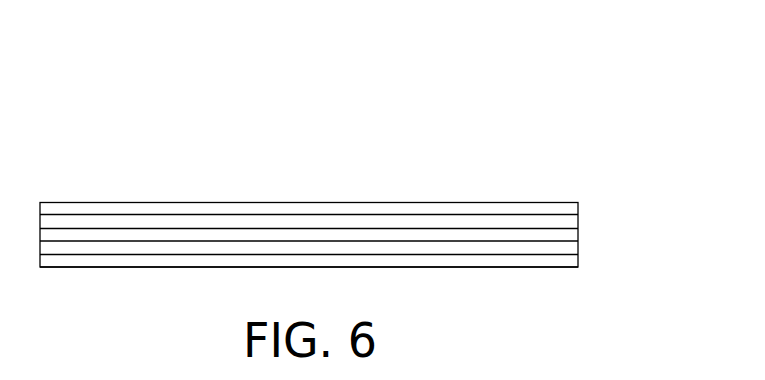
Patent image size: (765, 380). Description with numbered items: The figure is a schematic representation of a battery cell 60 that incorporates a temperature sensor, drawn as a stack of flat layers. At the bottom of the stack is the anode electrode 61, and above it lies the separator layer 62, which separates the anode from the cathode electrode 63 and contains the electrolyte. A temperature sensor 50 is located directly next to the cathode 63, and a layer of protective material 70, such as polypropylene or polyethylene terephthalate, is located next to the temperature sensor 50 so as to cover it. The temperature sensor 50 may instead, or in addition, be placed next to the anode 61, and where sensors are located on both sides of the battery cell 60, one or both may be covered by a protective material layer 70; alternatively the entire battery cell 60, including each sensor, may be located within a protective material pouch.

The battery cell 60 is at (339, 172).
The layer of protective material 70 is at (551, 208).
The temperature sensor 50 is at (572, 220).
The cathode electrode 63 is at (572, 235).
The separator layer 62 is at (572, 247).
The anode electrode 61 is at (551, 258).